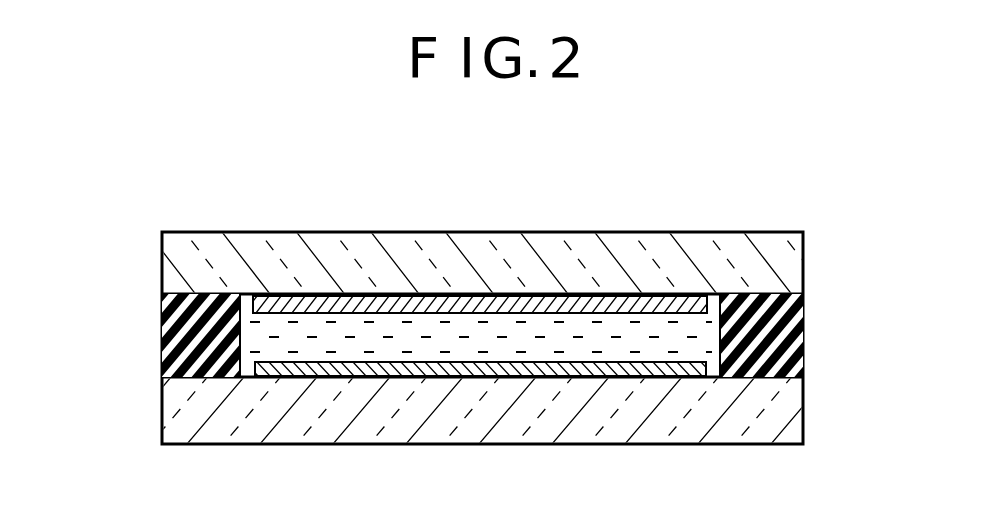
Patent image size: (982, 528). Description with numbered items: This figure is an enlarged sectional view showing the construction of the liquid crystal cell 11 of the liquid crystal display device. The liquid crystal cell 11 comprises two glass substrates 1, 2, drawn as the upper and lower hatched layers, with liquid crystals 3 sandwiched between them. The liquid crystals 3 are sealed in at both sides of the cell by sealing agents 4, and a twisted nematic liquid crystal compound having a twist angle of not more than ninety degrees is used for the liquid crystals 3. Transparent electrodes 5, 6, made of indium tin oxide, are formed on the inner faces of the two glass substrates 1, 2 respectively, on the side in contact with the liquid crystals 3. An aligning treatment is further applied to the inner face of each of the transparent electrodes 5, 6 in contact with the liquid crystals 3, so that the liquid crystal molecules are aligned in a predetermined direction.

The glass substrate 1 is at (170, 240).
The glass substrate 2 is at (180, 433).
The liquid crystals 3 is at (452, 333).
The sealing agent 4 is at (170, 326).
The transparent electrode 5 is at (317, 295).
The transparent electrode 6 is at (303, 376).
The liquid crystal cell 11 is at (817, 233).